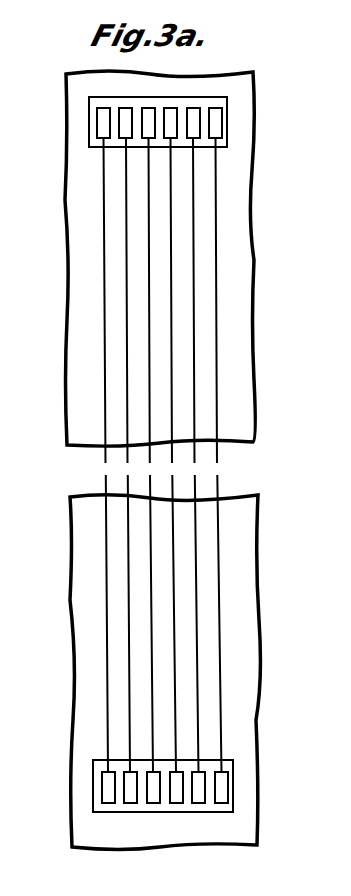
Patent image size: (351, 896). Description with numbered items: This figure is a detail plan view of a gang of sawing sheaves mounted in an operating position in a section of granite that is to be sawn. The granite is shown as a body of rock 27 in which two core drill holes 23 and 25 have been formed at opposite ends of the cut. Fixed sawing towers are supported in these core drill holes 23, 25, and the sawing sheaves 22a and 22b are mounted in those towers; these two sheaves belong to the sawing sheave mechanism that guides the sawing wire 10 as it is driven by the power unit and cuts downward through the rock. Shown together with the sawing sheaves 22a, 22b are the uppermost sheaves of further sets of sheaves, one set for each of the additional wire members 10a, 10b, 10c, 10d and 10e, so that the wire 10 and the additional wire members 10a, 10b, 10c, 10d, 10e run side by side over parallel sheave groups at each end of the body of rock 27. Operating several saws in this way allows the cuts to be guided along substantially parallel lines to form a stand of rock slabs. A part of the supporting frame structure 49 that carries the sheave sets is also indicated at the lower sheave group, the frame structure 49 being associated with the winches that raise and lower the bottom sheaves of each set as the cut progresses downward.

The wire 10 is at (220, 613).
The additional wire member 10a is at (197, 583).
The additional wire member 10b is at (175, 552).
The additional wire member 10c is at (150, 532).
The additional wire member 10d is at (127, 412).
The additional wire member 10e is at (104, 382).
The sawing sheave 22a is at (202, 782).
The sawing sheave 22b is at (215, 127).
The core drill hole 23 is at (227, 112).
The core drill hole 25 is at (93, 792).
The body of rock 27 is at (230, 262).
The supporting frame structure 49 is at (210, 803).